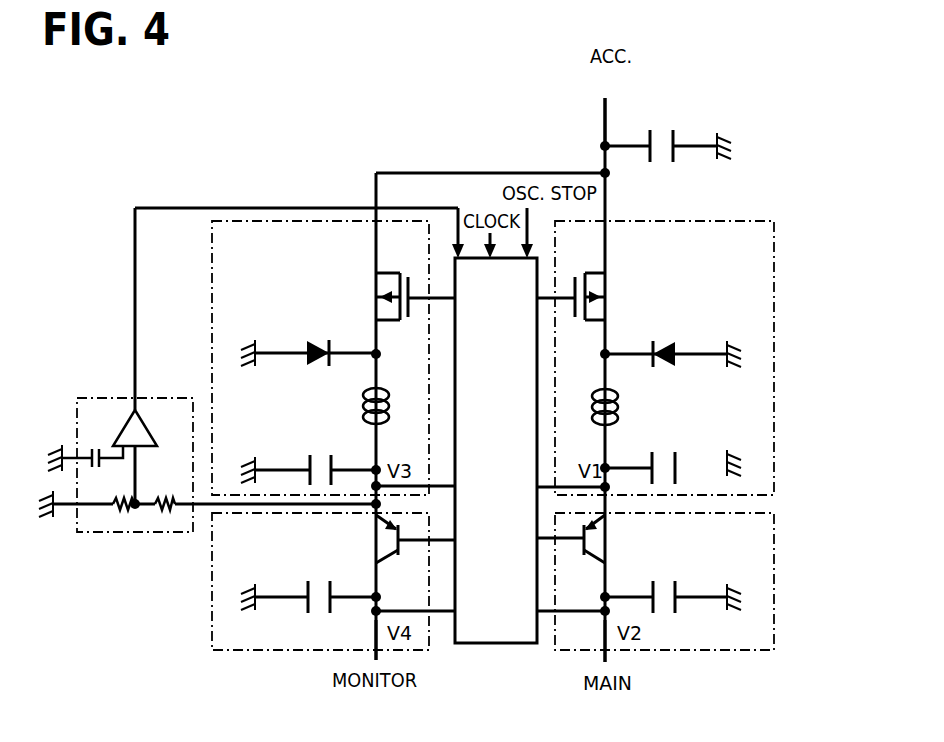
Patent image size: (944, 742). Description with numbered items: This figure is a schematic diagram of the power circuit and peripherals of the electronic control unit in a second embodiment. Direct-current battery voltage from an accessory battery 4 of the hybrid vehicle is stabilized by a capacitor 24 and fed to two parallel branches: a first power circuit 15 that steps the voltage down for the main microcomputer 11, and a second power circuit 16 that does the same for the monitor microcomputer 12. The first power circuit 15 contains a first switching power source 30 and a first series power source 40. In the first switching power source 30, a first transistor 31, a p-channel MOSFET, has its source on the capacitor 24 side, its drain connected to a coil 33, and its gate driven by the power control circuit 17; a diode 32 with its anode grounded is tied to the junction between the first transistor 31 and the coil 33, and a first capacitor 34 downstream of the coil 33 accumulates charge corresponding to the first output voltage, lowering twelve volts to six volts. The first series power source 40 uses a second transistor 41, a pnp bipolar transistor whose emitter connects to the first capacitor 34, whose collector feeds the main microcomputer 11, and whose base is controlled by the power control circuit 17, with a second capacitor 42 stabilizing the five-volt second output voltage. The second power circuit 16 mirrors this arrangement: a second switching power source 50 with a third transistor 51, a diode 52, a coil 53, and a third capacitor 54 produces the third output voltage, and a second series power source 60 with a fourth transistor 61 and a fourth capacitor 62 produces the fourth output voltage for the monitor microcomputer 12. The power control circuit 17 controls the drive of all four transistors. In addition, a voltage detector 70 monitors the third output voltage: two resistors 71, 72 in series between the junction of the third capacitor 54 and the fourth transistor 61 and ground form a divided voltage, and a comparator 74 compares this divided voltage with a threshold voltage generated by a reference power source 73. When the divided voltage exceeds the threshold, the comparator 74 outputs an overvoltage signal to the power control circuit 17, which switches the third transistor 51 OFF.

The accessory battery 4 is at (614, 107).
The main microcomputer 11 is at (606, 667).
The monitor microcomputer 12 is at (374, 667).
The first power circuit 15 is at (778, 220).
The second power circuit 16 is at (206, 637).
The power control circuit 17 is at (500, 644).
The capacitor 24 is at (670, 140).
The first switching power source 30 is at (775, 305).
The first transistor 31 is at (601, 292).
The diode 32 is at (672, 343).
The coil 33 is at (618, 410).
The first capacitor 34 is at (672, 455).
The first series power source 40 is at (775, 548).
The second transistor 41 is at (602, 556).
The second capacitor 42 is at (672, 582).
The second switching power source 50 is at (208, 345).
The third transistor 51 is at (383, 295).
The diode 52 is at (316, 343).
The coil 53 is at (363, 410).
The third capacitor 54 is at (310, 456).
The second series power source 60 is at (207, 545).
The fourth transistor 61 is at (382, 550).
The fourth capacitor 62 is at (308, 582).
The voltage detector 70 is at (93, 396).
The resistor 71 is at (165, 496).
The resistor 72 is at (126, 507).
The reference power source 73 is at (92, 452).
The comparator 74 is at (150, 438).